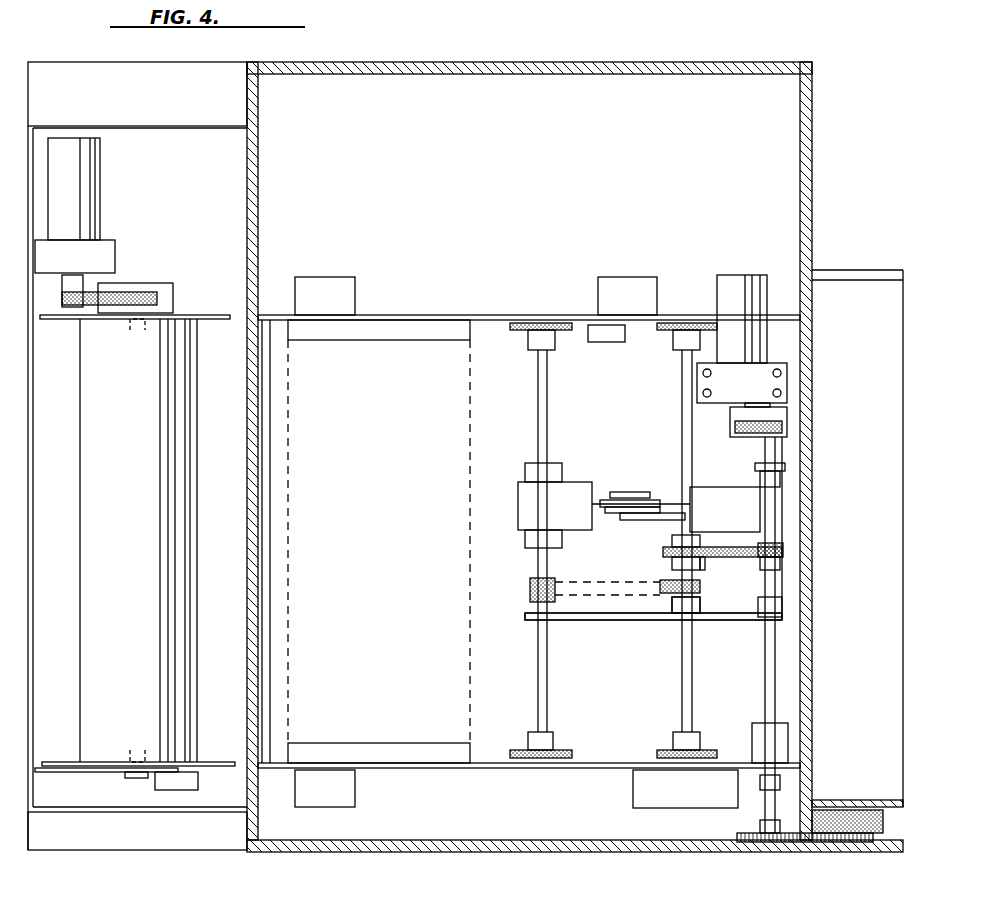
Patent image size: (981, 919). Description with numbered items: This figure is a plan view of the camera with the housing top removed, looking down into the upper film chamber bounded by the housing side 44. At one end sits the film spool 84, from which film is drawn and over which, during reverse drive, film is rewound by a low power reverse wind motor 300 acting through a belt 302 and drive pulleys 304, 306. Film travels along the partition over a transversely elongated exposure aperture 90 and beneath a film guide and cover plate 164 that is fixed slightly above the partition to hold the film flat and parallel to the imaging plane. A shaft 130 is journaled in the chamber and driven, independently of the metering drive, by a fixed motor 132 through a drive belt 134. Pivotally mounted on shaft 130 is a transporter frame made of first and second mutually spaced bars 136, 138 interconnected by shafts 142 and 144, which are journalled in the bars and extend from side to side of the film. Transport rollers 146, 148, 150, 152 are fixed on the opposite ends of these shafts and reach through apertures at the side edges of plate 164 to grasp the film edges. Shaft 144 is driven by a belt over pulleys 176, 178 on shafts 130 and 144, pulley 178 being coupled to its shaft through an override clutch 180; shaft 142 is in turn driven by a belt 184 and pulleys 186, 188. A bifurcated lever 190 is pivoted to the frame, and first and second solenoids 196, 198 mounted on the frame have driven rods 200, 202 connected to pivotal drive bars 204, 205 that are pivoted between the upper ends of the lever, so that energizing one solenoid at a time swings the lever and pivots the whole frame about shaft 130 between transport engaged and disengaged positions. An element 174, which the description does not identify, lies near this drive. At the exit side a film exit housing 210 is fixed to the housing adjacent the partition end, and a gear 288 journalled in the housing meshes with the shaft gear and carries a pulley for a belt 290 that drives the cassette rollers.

The side 44 is at (812, 205).
The film spool 84 is at (220, 297).
The exposure aperture 90 is at (290, 640).
The shaft 130 is at (765, 689).
The fixed motor 132 is at (730, 283).
The drive belt 134 is at (787, 427).
The first bar 136 is at (785, 467).
The second bar 138 is at (757, 620).
The shaft 142 is at (538, 665).
The shaft 144 is at (682, 677).
The transport roller 146 is at (540, 760).
The transport roller 148 is at (524, 323).
The transport roller 150 is at (742, 838).
The transport roller 152 is at (697, 323).
The film guide and cover plate 164 is at (418, 345).
The spacer 174 is at (706, 562).
The pulley 176 is at (783, 562).
The pulley 178 is at (665, 547).
The override clutch 180 is at (700, 587).
The belt 184 is at (636, 605).
The pulley 186 is at (530, 599).
The pulley 188 is at (700, 610).
The bifurcated lever 190 is at (652, 500).
The first solenoid 196 is at (525, 501).
The second solenoid 198 is at (732, 487).
The driven rod 200 is at (592, 503).
The driven rod 202 is at (685, 508).
The pivotal drive bar 204 is at (648, 520).
The pivotal drive bar 205 is at (635, 487).
The film exit housing 210 is at (872, 282).
The gear 288 is at (821, 843).
The belt 290 is at (846, 812).
The reverse wind motor 300 is at (100, 172).
The belt 302 is at (110, 292).
The drive pulley 304 is at (160, 287).
The drive pulley 306 is at (88, 283).